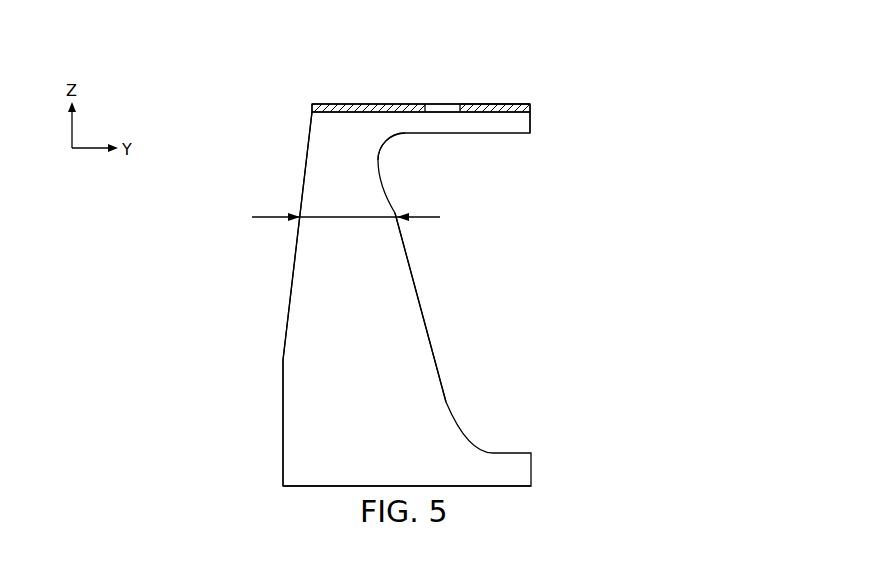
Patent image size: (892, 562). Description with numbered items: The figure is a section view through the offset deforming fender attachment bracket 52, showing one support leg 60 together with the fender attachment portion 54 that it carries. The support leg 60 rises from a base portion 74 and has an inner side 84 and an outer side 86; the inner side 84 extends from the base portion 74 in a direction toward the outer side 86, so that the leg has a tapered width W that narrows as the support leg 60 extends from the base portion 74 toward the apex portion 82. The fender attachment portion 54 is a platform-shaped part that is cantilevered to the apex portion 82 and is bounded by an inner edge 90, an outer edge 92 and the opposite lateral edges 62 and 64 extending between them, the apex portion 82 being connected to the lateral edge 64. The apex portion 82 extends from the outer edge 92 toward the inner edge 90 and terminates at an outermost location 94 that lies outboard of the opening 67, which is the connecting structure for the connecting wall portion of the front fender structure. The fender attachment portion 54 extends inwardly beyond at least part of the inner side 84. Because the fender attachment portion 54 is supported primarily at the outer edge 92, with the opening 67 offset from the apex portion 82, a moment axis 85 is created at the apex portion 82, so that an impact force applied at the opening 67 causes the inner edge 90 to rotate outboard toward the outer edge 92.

The offset deforming fender attachment bracket 52 is at (592, 56).
The fender attachment portion 54 is at (500, 70).
The support leg 60 is at (250, 312).
The lateral edge 62 is at (402, 104).
The lateral edge 64 is at (366, 98).
The opening 67 is at (427, 104).
The base portion 74 is at (246, 464).
The apex portion 82 is at (270, 171).
The inner side 84 is at (425, 318).
The moment axis 85 is at (332, 144).
The outer side 86 is at (282, 410).
The inner edge 90 is at (530, 106).
The outer edge 92 is at (312, 104).
The outermost location 94 is at (378, 152).
The tapered width W is at (427, 220).